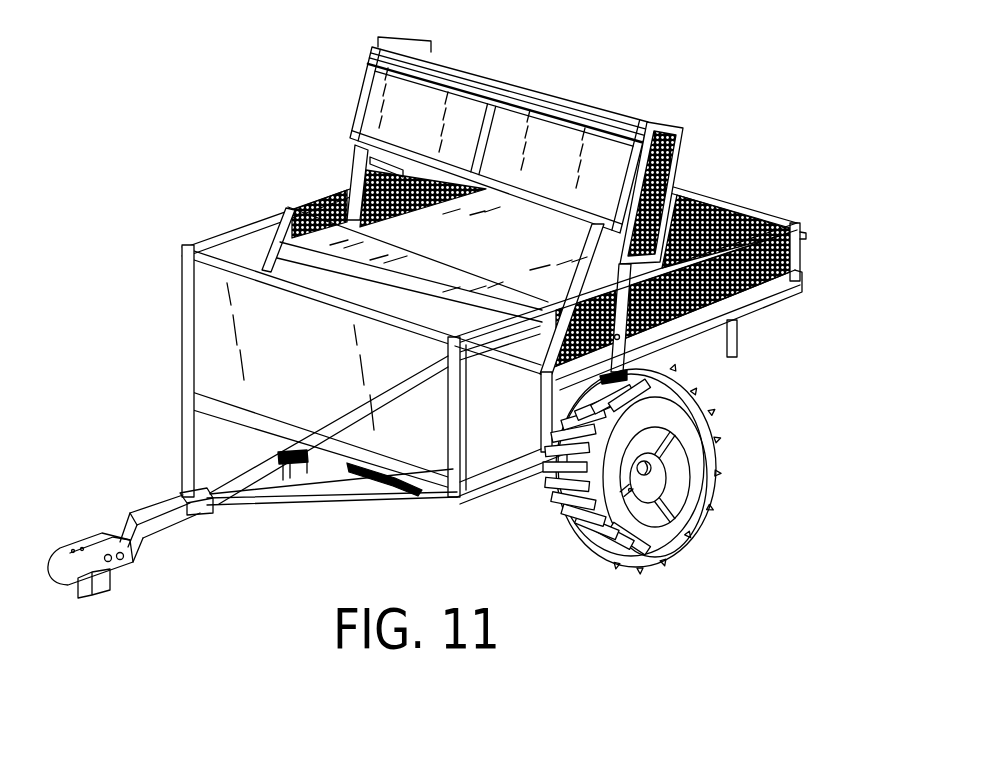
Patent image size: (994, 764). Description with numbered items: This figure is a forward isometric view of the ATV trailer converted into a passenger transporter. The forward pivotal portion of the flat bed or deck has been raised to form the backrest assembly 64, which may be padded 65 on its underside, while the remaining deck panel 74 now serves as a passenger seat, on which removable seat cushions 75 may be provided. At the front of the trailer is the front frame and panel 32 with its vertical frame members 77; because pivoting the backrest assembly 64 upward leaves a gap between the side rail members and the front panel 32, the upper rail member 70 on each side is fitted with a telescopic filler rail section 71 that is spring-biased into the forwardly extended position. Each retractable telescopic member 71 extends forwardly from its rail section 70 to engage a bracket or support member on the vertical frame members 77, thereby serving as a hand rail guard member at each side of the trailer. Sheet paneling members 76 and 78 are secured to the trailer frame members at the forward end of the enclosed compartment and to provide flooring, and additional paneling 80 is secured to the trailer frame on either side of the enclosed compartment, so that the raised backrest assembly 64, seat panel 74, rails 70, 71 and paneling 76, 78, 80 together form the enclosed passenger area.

The front frame and panel 32 is at (317, 377).
The backrest assembly 64 is at (598, 76).
The padding 65 is at (547, 137).
The upper rail member 70 is at (315, 200).
The telescopic filler rail section 71 is at (237, 222).
The deck panel 74 is at (542, 250).
The seat cushions 75 is at (445, 279).
The sheet paneling member 76 is at (522, 417).
The vertical frame members 77 is at (180, 320).
The sheet paneling member 78 is at (483, 452).
The side paneling 80 is at (681, 345).